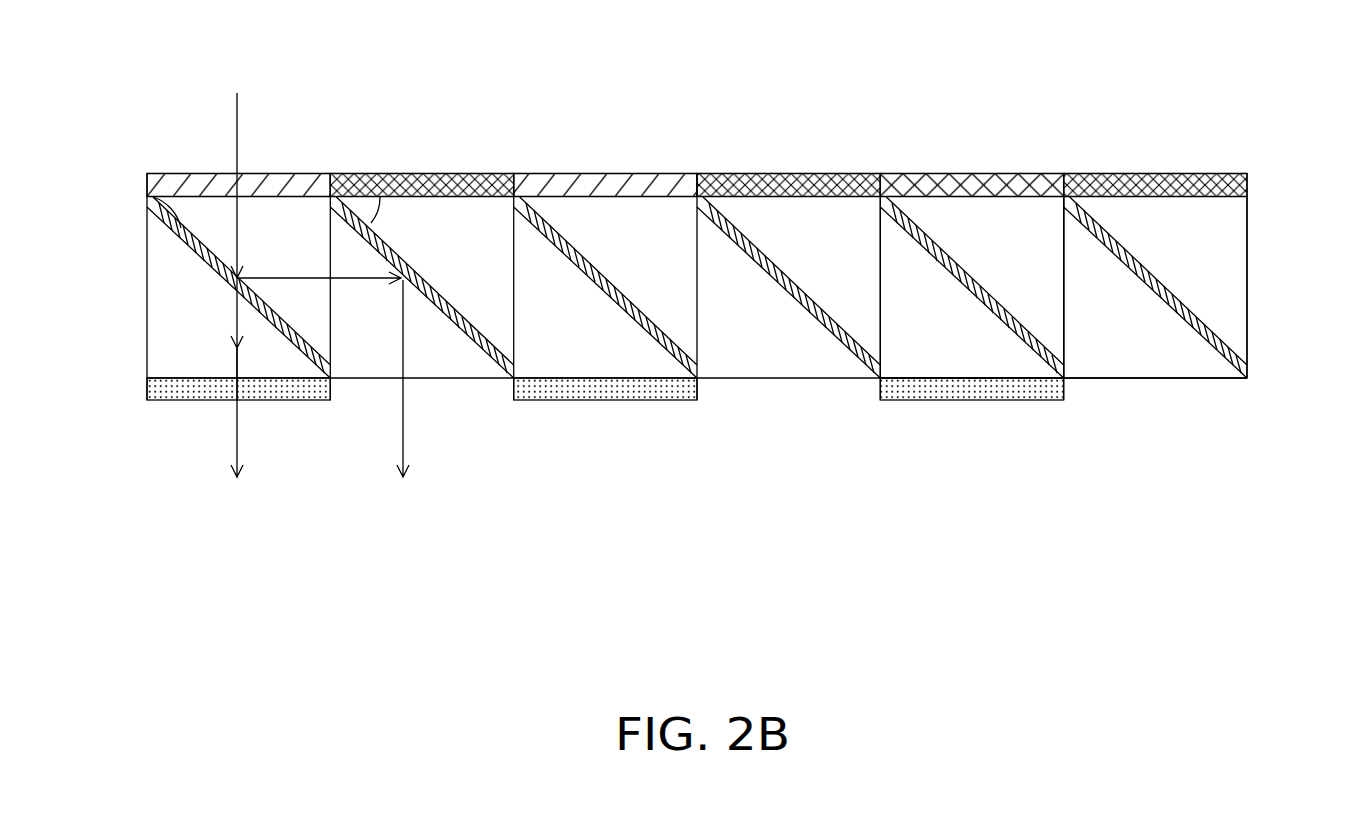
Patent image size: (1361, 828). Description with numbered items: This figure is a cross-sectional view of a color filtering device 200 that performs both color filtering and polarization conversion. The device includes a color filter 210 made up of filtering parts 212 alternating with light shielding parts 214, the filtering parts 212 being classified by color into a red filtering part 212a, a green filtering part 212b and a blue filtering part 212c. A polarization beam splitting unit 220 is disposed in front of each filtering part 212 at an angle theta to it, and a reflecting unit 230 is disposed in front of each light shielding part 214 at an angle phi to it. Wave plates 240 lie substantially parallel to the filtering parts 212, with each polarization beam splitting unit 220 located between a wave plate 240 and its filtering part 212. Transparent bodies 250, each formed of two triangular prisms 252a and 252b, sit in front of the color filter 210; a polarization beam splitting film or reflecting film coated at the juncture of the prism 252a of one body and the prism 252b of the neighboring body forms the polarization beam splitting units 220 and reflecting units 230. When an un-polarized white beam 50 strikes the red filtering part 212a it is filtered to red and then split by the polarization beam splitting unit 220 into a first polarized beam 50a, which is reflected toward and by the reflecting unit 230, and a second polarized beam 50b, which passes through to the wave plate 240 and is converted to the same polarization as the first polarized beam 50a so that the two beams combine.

The color filtering device 200 is at (1349, 661).
The color filter 210 is at (697, 103).
The filtering parts 212 is at (605, 134).
The red filtering part 212a is at (298, 185).
The green filtering part 212b is at (677, 191).
The blue filtering part 212c is at (997, 176).
The light shielding parts 214 is at (578, 62).
The polarization beam splitting unit 220 is at (165, 237).
The reflecting unit 230 is at (465, 330).
The wave plate 240 is at (148, 390).
The transparent body 250 is at (1063, 354).
The triangular prism 252a is at (1160, 365).
The triangular prism 252b is at (1027, 304).
The un-polarized beam 50 is at (237, 150).
The first polarized beam 50a is at (242, 443).
The second polarized beam 50b is at (232, 368).